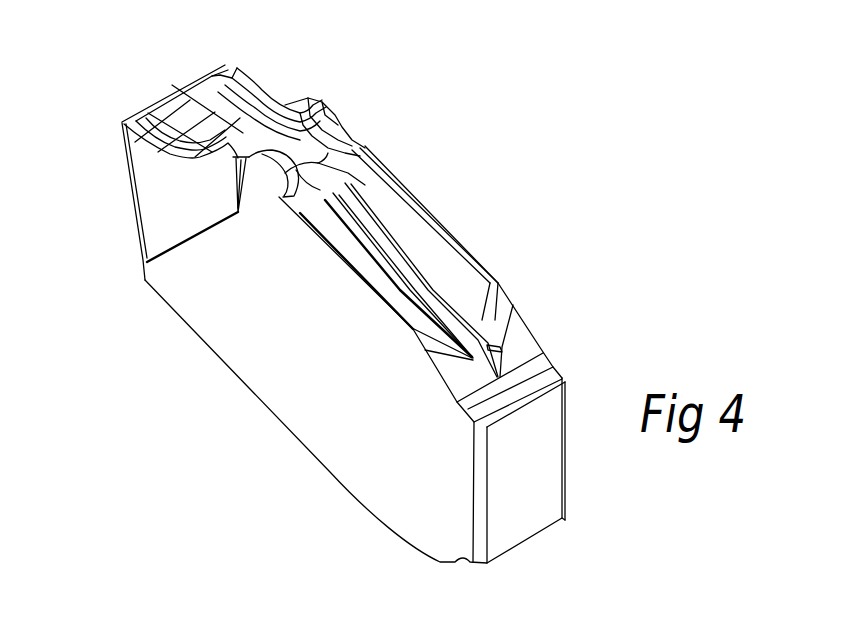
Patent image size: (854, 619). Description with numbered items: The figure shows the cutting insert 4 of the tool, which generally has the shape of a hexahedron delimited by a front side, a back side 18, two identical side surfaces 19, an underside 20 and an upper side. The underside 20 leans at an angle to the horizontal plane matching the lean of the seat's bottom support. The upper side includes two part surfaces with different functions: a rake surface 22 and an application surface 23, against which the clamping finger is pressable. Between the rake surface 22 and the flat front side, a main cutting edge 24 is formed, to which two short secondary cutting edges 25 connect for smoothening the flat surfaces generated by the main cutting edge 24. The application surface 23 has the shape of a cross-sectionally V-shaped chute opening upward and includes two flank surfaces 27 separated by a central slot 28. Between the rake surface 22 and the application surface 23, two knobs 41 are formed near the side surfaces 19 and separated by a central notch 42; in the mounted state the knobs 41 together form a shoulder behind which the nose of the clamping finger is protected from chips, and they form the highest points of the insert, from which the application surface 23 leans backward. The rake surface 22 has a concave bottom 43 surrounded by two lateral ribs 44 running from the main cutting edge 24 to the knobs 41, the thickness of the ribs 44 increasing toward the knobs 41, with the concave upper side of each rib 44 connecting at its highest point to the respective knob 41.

The cutting insert 4 is at (155, 342).
The back side 18 is at (541, 481).
The side surface 19 is at (392, 431).
The underside 20 is at (308, 456).
The rake surface 22 is at (278, 98).
The application surface 23 is at (417, 193).
The main cutting edge 24 is at (170, 86).
The secondary cutting edge 25 is at (222, 64).
The flank surface 27 is at (437, 254).
The central slot 28 is at (453, 323).
The knob 41 is at (345, 137).
The central notch 42 is at (300, 158).
The concave bottom 43 is at (193, 105).
The lateral rib 44 is at (253, 90).